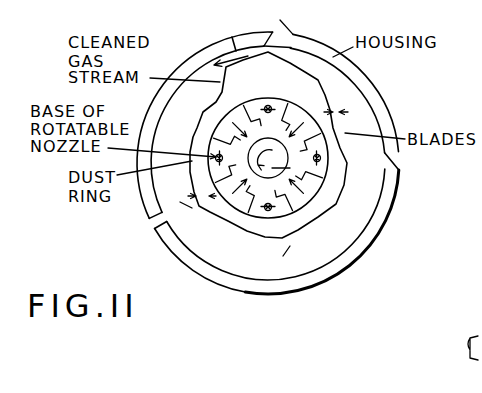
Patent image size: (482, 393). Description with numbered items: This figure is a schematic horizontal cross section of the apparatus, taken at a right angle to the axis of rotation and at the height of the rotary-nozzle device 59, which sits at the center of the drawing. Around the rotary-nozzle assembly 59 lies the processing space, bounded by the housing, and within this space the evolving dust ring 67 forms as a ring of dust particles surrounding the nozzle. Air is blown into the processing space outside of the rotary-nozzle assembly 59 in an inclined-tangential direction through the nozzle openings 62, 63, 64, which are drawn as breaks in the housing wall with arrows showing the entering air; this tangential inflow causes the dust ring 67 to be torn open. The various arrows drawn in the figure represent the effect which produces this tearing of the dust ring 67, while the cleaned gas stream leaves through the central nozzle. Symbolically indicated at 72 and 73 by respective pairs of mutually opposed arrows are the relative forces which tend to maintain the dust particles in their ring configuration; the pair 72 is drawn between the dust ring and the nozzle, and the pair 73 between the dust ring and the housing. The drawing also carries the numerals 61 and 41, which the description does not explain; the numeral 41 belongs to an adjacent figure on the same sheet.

The rotary-nozzle device 59 is at (298, 216).
The rotatable nozzle with blades 61 is at (338, 152).
The nozzle opening 62 is at (154, 214).
The nozzle opening 63 is at (300, 12).
The nozzle opening 64 is at (415, 172).
The dust ring 67 is at (232, 35).
The pair of mutually opposed arrows 72 is at (200, 193).
The pair of mutually opposed arrows 73 is at (348, 110).
The adjacent figure element 41 is at (459, 317).